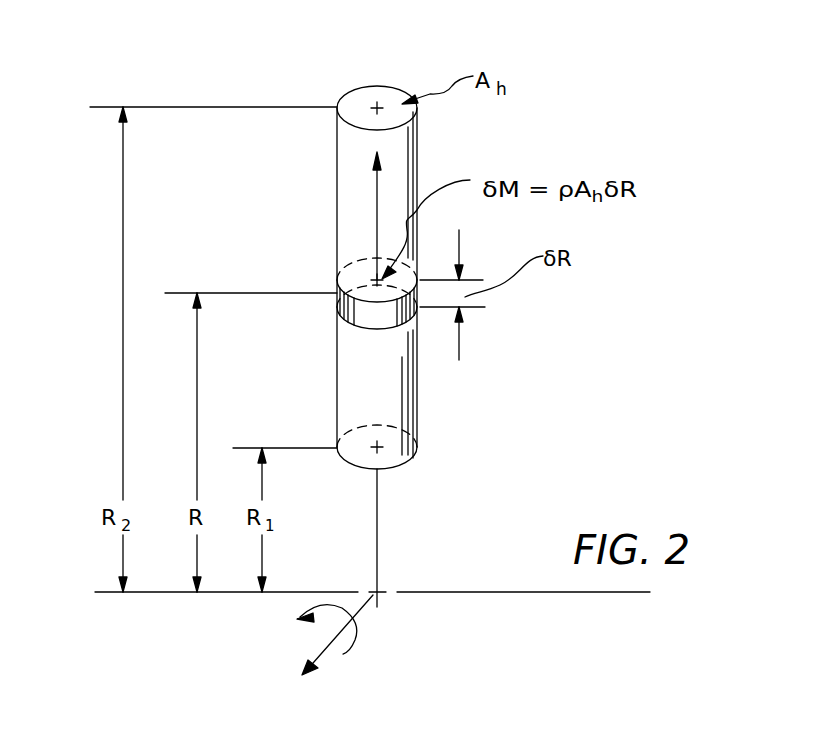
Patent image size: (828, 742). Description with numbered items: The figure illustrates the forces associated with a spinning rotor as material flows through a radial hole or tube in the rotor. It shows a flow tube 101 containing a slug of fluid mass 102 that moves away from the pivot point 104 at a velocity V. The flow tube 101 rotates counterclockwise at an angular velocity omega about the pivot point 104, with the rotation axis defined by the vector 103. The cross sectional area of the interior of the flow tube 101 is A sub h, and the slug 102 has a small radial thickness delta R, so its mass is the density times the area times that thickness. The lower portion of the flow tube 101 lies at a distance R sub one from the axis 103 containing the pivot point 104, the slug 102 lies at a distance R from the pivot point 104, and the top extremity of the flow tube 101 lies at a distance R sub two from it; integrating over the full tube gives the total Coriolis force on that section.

The flow tube 101 is at (395, 405).
The slug of fluid mass 102 is at (367, 312).
The vector 103 is at (357, 655).
The pivot point 104 is at (380, 591).